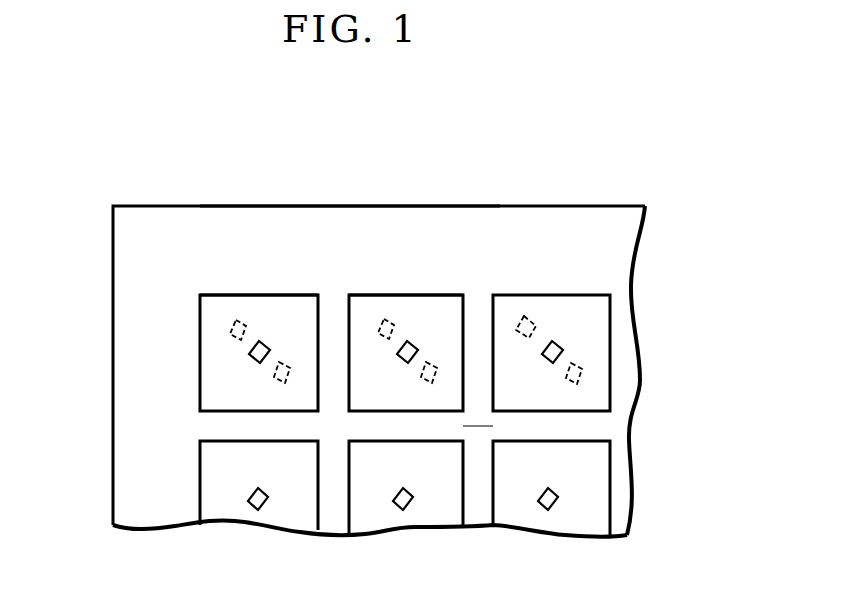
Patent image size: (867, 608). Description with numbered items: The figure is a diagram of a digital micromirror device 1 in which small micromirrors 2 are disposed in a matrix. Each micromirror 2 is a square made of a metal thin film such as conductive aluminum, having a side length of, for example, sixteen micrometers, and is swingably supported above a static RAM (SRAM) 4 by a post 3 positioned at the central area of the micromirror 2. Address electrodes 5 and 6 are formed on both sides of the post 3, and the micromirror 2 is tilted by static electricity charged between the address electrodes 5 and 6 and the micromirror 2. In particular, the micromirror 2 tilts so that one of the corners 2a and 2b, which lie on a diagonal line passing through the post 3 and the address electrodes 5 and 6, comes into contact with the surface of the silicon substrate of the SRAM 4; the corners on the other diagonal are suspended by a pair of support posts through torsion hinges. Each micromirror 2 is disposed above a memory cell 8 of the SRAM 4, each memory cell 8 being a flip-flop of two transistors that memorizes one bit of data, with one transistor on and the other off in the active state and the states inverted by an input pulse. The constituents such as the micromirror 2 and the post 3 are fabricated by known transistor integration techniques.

The digital micromirror device 1 is at (560, 145).
The micromirror 2 is at (210, 355).
The corner 2a is at (200, 296).
The corner 2b is at (320, 412).
The post 3 is at (261, 344).
The static RAM (SRAM) 4 is at (318, 192).
The address electrode 5 is at (236, 322).
The address electrode 6 is at (282, 385).
The memory cell 8 is at (571, 427).